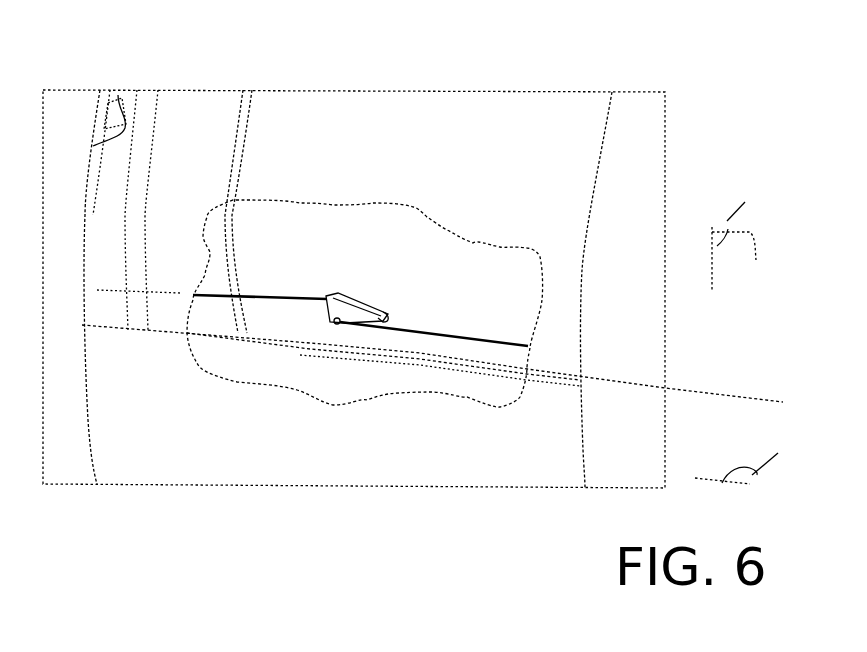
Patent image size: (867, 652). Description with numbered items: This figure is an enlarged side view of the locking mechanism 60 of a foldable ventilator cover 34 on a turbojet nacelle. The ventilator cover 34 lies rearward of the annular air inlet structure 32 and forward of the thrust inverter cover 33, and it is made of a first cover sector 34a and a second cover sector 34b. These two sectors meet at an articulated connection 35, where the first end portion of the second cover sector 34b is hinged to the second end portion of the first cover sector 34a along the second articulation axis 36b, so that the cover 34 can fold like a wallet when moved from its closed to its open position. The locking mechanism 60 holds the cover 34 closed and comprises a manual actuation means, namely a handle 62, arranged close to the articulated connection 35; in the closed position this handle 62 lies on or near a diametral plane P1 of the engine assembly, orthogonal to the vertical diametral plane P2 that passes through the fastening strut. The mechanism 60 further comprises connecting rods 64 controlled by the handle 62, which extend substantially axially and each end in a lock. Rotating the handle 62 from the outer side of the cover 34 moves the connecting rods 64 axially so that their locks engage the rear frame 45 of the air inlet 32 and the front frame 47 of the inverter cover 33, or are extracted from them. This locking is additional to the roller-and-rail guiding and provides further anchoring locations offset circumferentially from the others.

The air inlet structure 32 is at (637, 170).
The thrust inverter cover 33 is at (58, 412).
The ventilator cover 34 is at (483, 110).
The first cover sector 34a is at (383, 145).
The second cover sector 34b is at (243, 430).
The articulated connection 35 is at (482, 359).
The second articulation axis 36b is at (702, 392).
The rear frame 45 is at (583, 449).
The front frame 47 is at (118, 95).
The locking mechanism 60 is at (352, 298).
The handle 62 is at (377, 316).
The connecting rod 64 is at (285, 298).
The diametral plane P1 is at (740, 470).
The vertical diametral plane P2 is at (752, 247).